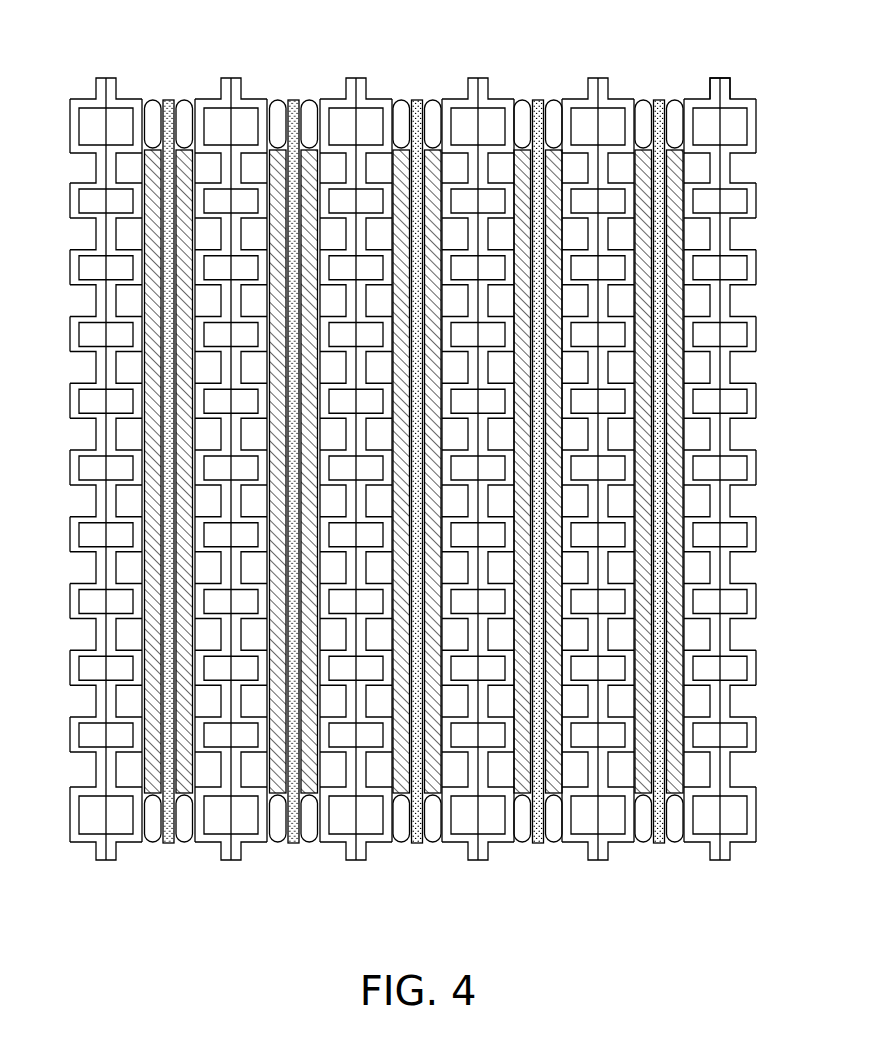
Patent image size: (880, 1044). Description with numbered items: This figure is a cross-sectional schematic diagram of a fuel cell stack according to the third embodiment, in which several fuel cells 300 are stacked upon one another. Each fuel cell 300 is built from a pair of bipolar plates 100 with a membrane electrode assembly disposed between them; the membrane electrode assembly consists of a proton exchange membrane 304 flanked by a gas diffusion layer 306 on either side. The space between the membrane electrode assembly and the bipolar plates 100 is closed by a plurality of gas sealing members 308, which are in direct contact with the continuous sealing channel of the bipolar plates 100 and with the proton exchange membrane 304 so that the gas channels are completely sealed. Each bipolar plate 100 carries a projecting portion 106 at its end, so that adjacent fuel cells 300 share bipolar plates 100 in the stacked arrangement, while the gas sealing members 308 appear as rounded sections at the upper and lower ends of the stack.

The fuel cell 300 is at (267, 63).
The bipolar plate 100 is at (562, 864).
The proton exchange membrane 304 is at (170, 844).
The gas diffusion layer 306 is at (326, 768).
The gas sealing member 308 is at (431, 819).
The connecting tab 106 is at (732, 85).